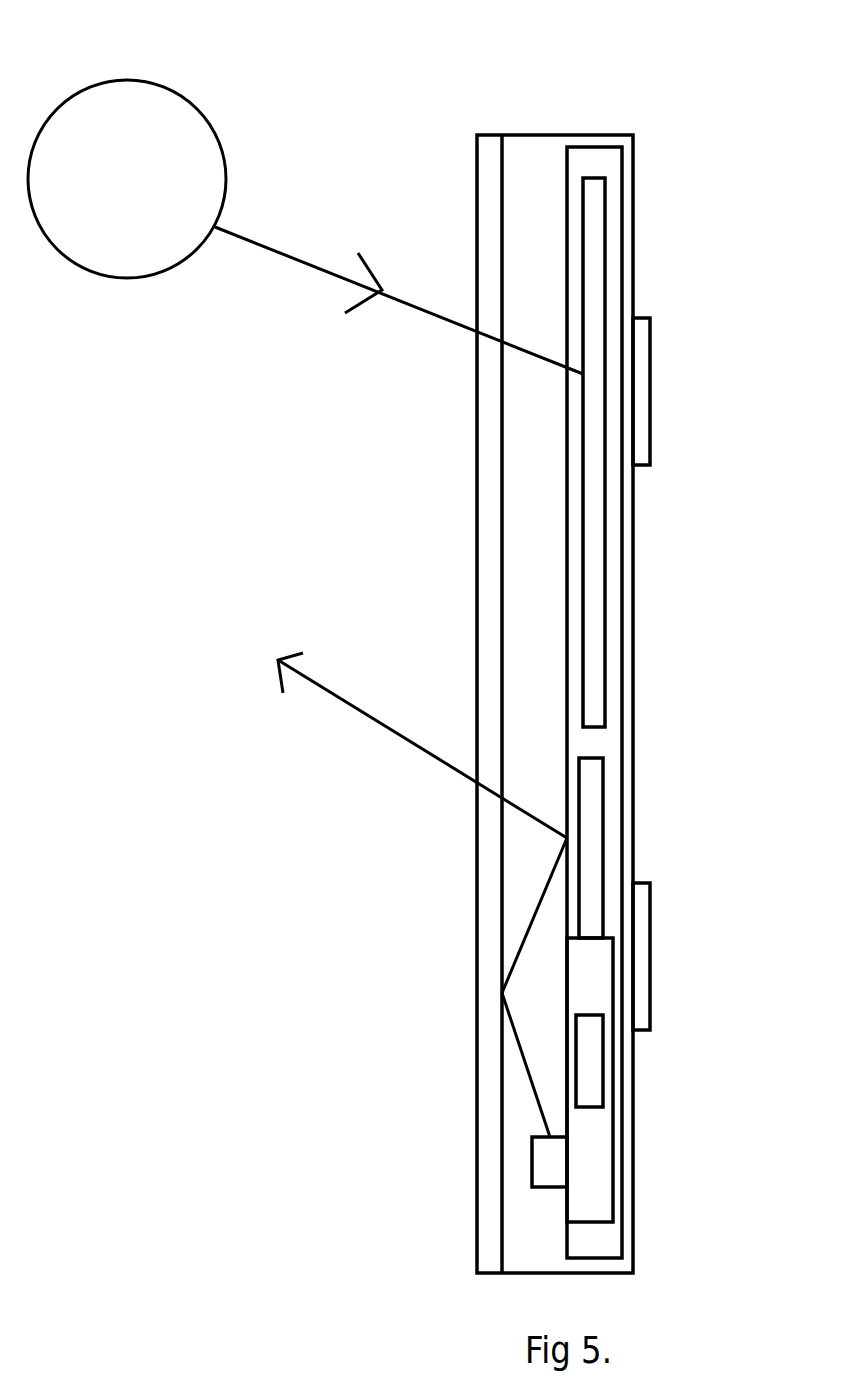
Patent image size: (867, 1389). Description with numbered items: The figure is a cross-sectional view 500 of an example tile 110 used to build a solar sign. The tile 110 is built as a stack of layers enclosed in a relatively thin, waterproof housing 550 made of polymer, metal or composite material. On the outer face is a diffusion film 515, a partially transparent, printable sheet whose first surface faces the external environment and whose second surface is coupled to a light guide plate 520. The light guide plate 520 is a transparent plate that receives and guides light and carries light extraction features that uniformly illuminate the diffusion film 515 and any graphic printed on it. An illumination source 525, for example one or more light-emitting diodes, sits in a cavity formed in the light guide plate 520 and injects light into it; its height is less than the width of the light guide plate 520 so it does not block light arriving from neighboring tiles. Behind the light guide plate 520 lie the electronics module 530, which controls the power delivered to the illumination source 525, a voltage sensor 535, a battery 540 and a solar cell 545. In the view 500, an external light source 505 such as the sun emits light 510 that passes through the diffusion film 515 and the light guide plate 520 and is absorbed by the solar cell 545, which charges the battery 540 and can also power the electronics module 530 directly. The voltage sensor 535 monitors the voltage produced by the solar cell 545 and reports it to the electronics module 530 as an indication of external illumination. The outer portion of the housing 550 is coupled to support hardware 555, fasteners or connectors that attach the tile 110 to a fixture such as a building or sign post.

The cross-sectional view 500 is at (497, 29).
The external light source 505 is at (138, 189).
The light 510 is at (298, 250).
The tile 110 is at (520, 133).
The diffusion film 515 is at (490, 453).
The light guide plate 520 is at (543, 209).
The illumination source 525 is at (550, 1160).
The electronics module 530 is at (593, 1196).
The voltage sensor 535 is at (590, 1062).
The battery 540 is at (594, 838).
The solar cell 545 is at (594, 527).
The housing 550 is at (633, 187).
The support hardware 555 is at (643, 360).